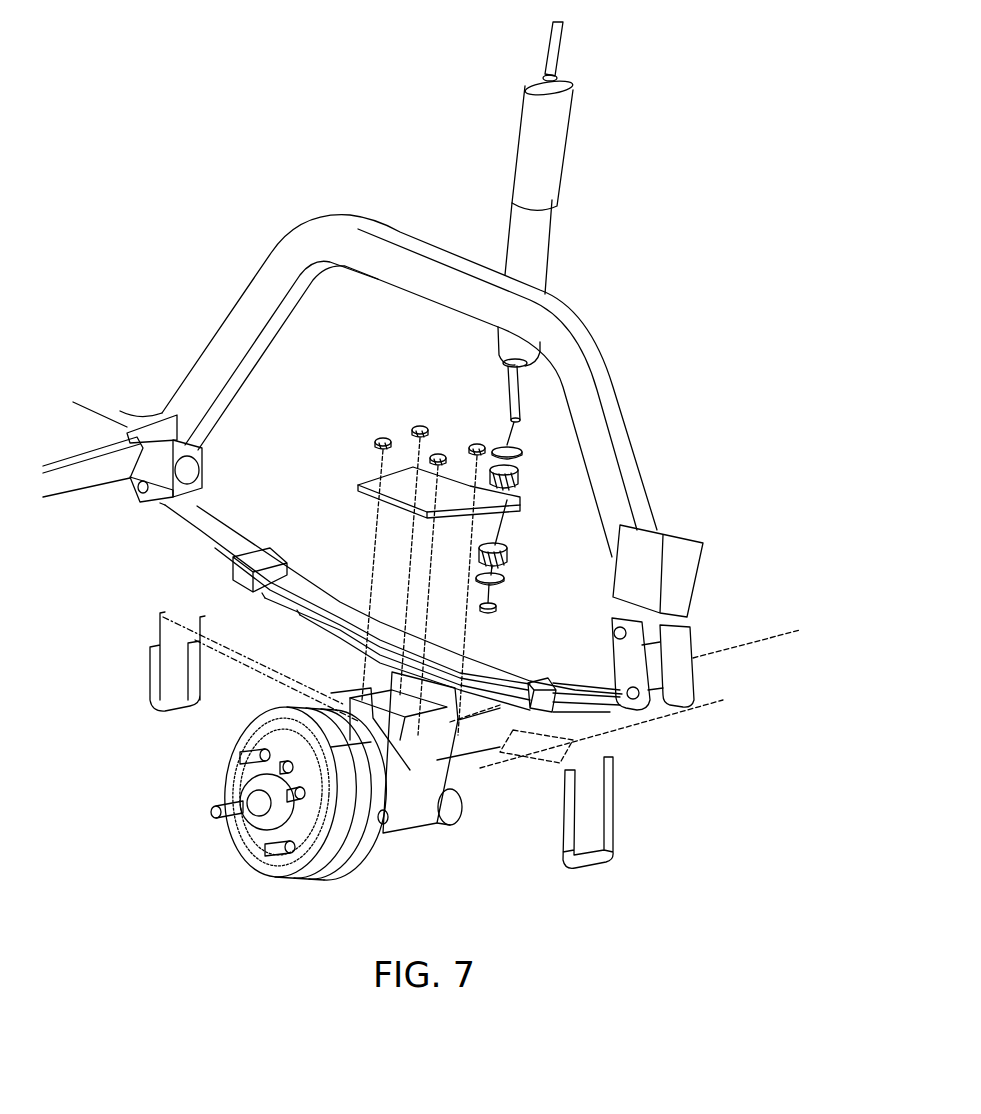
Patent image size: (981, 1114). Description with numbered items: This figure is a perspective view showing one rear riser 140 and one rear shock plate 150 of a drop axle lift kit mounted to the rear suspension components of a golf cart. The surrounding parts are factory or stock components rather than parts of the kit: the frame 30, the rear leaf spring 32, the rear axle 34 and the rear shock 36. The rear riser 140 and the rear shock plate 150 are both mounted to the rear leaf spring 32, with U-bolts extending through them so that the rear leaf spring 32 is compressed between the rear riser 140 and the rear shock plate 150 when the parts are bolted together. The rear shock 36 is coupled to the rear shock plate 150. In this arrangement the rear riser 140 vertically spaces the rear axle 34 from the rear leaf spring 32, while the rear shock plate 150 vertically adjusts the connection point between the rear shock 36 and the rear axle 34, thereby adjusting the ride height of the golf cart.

The frame 30 is at (592, 420).
The rear leaf spring 32 is at (203, 530).
The rear axle 34 is at (600, 717).
The rear shock 36 is at (540, 175).
The rear riser 140 is at (430, 792).
The rear shock plate 150 is at (407, 488).